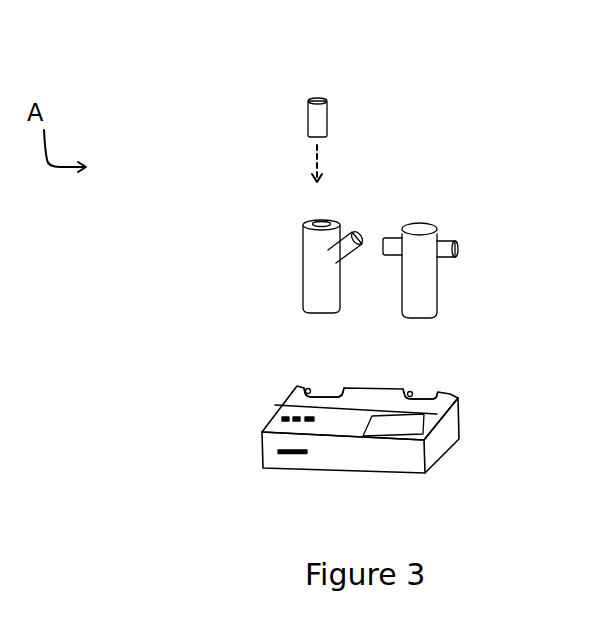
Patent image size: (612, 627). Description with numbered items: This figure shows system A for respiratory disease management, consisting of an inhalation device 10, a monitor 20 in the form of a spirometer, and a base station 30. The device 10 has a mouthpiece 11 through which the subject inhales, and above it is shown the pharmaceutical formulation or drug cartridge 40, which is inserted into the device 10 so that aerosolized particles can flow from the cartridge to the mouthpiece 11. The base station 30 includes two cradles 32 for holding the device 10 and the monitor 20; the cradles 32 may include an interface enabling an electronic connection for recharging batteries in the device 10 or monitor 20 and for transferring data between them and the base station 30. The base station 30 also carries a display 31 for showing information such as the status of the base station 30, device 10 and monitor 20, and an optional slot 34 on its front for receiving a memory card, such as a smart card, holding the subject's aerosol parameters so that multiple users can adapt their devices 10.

The device 10 is at (302, 260).
The mouthpiece 11 is at (358, 234).
The monitor 20 is at (442, 276).
The base station 30 is at (461, 428).
The display 31 is at (400, 424).
The cradles 32 is at (423, 392).
The slot 34 is at (292, 458).
The drug cartridge 40 is at (318, 118).